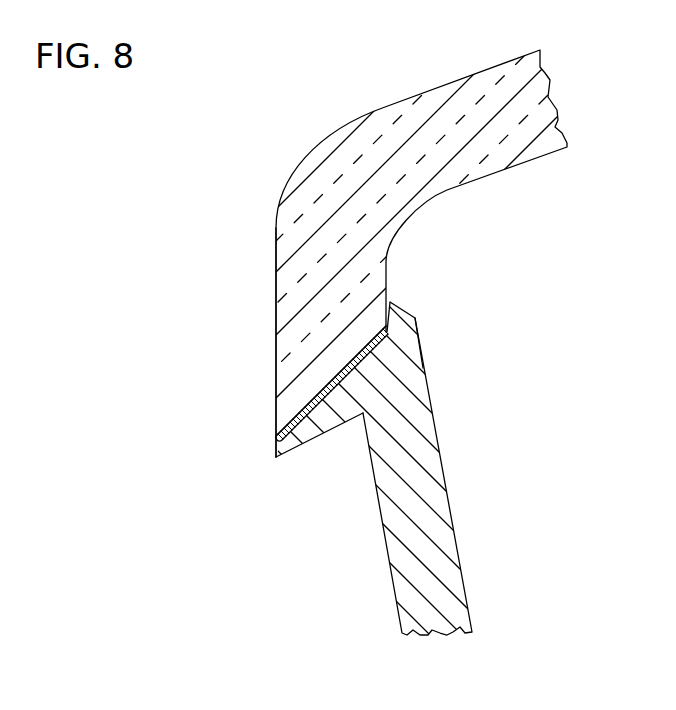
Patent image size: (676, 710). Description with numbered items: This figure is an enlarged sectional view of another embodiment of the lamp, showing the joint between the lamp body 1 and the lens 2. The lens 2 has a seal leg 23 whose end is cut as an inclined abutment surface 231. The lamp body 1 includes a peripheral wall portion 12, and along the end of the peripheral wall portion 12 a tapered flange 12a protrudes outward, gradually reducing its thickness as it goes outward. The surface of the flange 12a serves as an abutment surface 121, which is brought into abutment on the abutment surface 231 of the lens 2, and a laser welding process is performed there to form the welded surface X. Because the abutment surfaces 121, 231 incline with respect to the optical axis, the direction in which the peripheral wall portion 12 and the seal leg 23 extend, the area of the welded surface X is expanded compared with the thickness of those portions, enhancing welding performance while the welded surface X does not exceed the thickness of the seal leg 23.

The lamp body 1 is at (468, 603).
The peripheral wall portion 12 is at (435, 512).
The tapered flange 12a is at (312, 428).
The abutment surface 121 is at (310, 404).
The lens 2 is at (386, 110).
The seal leg 23 is at (298, 278).
The abutment surface 231 is at (386, 333).
The welded surface X is at (326, 376).